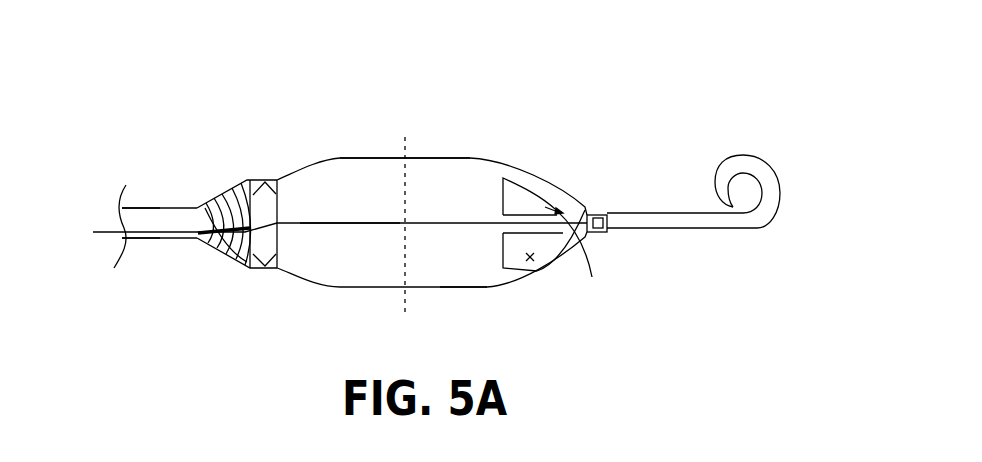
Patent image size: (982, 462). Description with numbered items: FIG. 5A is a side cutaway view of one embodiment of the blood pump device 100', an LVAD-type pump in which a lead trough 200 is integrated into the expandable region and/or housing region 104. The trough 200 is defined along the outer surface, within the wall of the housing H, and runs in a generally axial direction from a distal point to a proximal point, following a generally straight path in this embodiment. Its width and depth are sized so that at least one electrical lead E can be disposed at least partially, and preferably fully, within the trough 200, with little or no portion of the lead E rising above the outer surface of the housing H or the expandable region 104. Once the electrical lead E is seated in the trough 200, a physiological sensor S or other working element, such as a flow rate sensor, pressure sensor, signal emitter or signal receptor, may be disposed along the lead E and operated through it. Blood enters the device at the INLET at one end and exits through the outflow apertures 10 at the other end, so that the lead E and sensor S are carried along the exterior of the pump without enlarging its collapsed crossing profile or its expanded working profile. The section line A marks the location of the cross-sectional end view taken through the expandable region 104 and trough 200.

The blood pump device 100' is at (501, 80).
The expandable region and/or housing region 104 is at (557, 110).
The lead trough 200 is at (223, 200).
The outflow apertures 10 is at (283, 281).
The section A- A is at (404, 228).
The electrical lead E is at (150, 240).
The physiological sensor S is at (603, 205).
The housing H is at (493, 287).
The inlet INLET is at (562, 241).